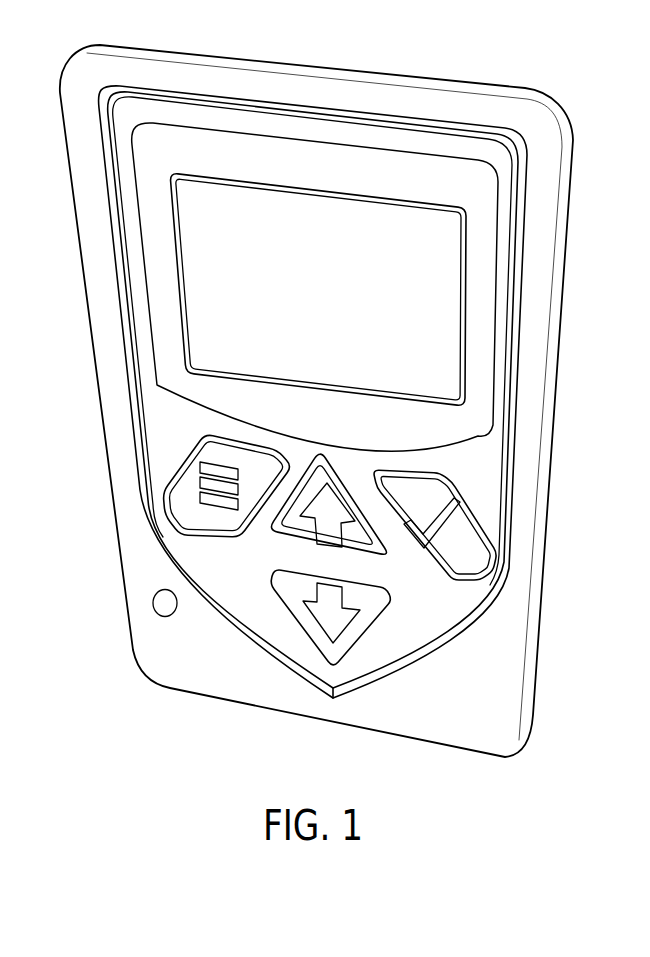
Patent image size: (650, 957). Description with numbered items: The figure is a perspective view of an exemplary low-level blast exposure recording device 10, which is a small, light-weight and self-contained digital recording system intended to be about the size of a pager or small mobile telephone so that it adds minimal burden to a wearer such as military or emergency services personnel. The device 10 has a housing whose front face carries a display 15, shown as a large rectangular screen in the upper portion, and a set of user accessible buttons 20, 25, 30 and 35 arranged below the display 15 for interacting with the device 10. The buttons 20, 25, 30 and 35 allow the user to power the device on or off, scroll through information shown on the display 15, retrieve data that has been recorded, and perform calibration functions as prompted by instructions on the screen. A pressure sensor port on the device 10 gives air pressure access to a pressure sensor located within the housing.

The blast exposure recording device 10 is at (78, 58).
The display 15 is at (195, 172).
The user accessible button 20 is at (183, 467).
The user accessible button 25 is at (475, 513).
The user accessible button 30 is at (273, 540).
The user accessible button 35 is at (363, 640).